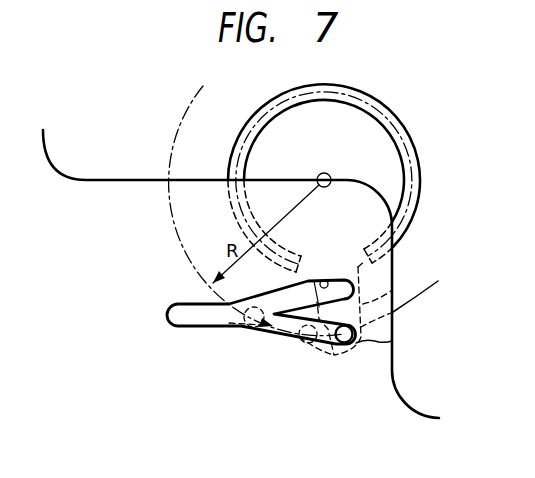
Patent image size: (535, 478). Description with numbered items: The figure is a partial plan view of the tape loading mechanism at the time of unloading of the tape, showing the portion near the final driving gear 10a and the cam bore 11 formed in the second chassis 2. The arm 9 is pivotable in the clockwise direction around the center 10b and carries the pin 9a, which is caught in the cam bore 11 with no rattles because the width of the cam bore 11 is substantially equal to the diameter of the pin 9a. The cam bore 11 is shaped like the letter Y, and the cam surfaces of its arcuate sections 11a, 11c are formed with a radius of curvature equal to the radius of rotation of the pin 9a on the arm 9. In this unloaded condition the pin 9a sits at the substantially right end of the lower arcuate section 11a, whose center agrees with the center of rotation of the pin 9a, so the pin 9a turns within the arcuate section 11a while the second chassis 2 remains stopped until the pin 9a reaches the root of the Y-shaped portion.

The second chassis 2 is at (400, 398).
The arm 9 is at (390, 292).
The pin 9a is at (391, 342).
The driving gear 10a is at (410, 143).
The center 10b is at (323, 174).
The cam bore 11 is at (165, 318).
The arcuate section 11a is at (337, 345).
The arcuate section 11c is at (322, 281).